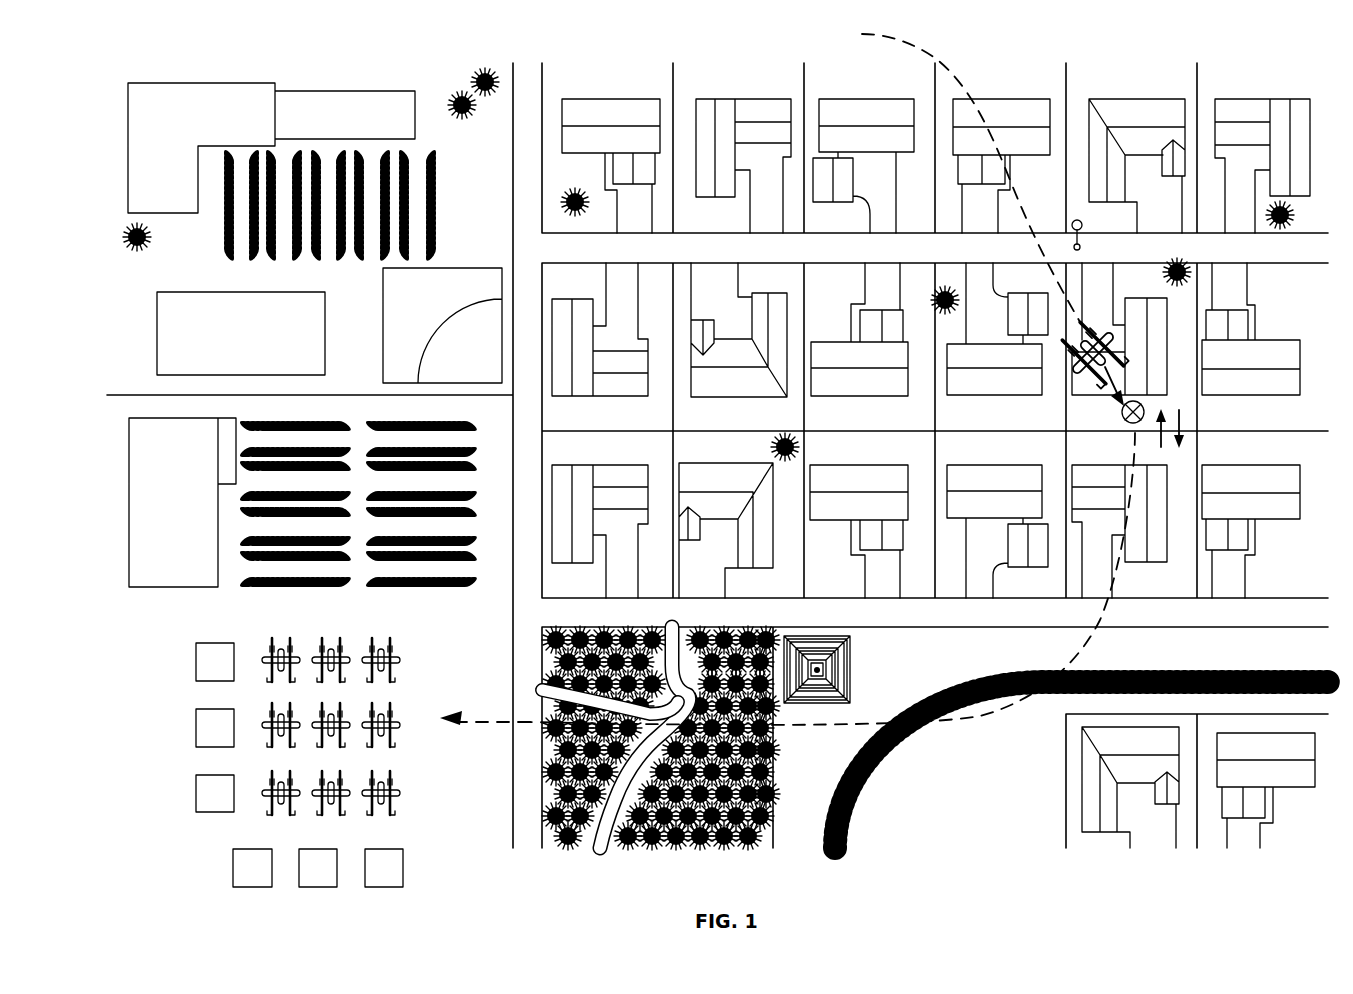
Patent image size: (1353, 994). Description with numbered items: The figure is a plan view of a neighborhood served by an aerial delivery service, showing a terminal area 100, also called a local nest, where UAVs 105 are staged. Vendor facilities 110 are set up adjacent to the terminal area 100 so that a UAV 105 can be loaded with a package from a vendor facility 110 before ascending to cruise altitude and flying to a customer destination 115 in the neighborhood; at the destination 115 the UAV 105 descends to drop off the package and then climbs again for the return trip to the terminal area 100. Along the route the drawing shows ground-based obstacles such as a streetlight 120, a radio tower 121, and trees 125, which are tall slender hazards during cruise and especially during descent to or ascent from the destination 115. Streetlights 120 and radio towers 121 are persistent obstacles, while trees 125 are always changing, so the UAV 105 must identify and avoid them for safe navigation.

The terminal area 100 is at (172, 872).
The unmanned aerial vehicle 105 is at (400, 657).
The vendor facility 110 is at (196, 727).
The customer destination 115 is at (1122, 418).
The streetlight 120 is at (1071, 200).
The radio tower 121 is at (868, 646).
The tree 125 is at (520, 64).